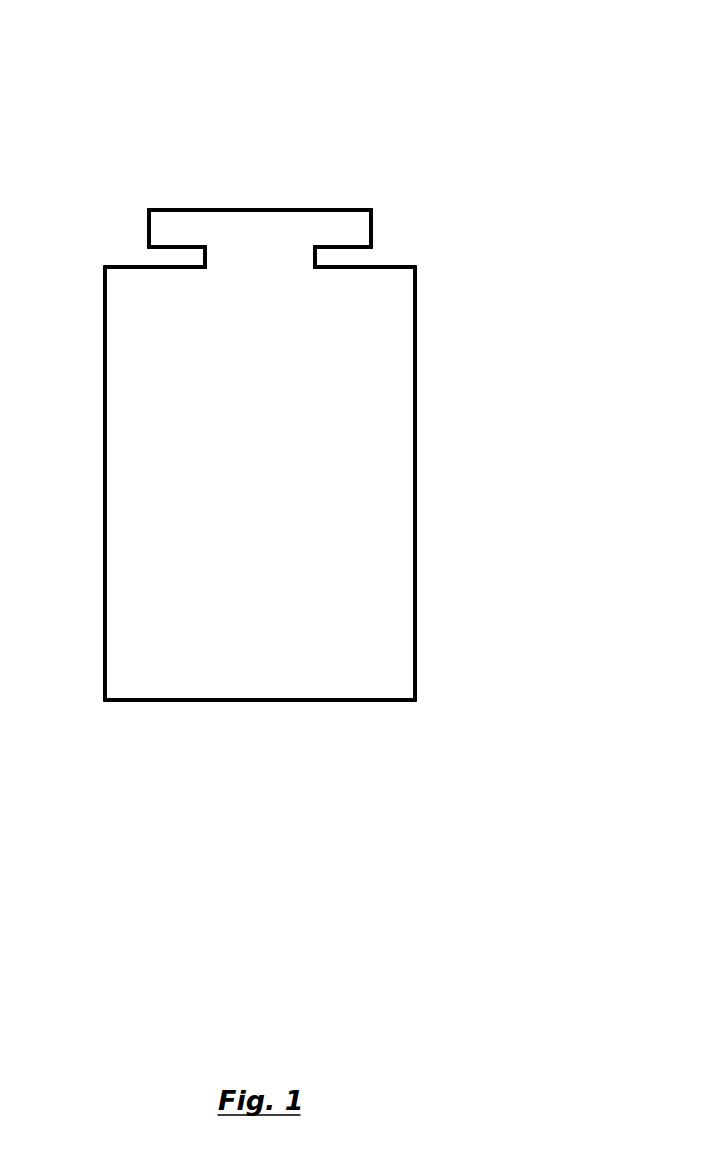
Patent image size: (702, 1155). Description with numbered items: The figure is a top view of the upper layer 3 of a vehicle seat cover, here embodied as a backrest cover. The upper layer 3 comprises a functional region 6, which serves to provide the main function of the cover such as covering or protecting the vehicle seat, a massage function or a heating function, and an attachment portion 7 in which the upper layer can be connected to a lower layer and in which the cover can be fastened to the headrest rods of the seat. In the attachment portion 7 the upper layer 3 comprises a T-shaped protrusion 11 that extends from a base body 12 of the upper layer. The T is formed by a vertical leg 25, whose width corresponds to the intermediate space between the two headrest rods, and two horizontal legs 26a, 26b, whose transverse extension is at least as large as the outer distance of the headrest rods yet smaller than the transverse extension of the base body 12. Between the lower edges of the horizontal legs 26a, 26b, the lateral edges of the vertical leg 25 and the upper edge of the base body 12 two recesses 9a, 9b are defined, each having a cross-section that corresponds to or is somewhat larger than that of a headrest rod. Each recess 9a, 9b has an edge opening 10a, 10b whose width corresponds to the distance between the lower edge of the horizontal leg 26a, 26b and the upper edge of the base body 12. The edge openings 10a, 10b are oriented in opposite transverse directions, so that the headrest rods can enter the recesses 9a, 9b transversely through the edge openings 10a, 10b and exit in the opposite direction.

The upper layer 3 is at (297, 87).
The functional region 6 is at (265, 602).
The attachment portion 7 is at (452, 282).
The recess 9a is at (187, 257).
The recess 9b is at (325, 257).
The edge opening 10a is at (147, 255).
The edge opening 10b is at (372, 256).
The T-shaped protrusion 11 is at (278, 250).
The base body 12 is at (278, 305).
The vertical leg 25 is at (237, 258).
The horizontal leg 26a is at (167, 228).
The horizontal leg 26b is at (342, 223).